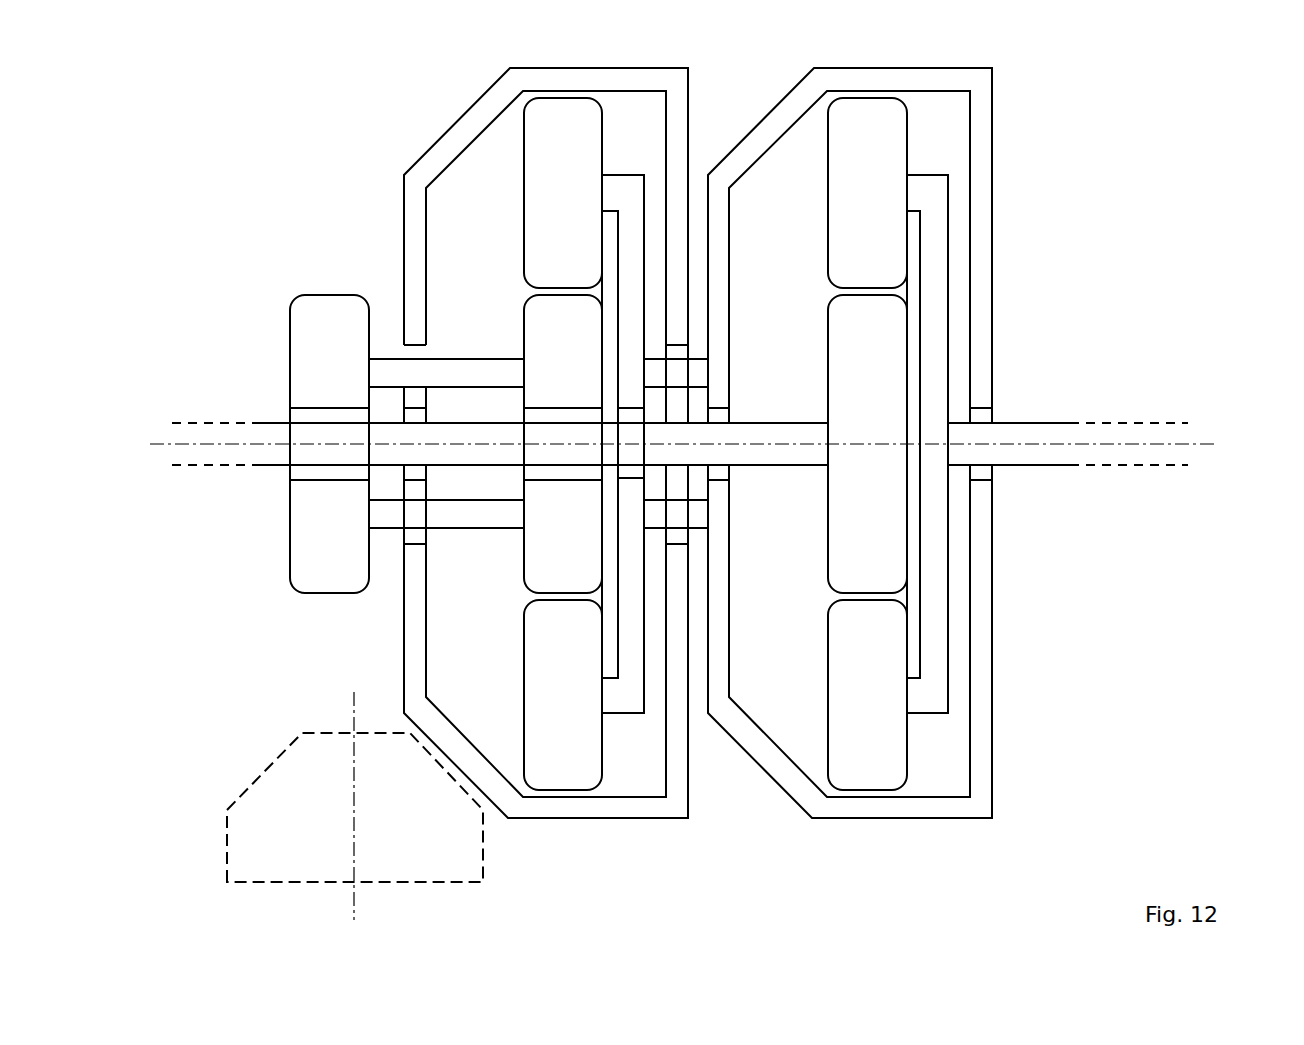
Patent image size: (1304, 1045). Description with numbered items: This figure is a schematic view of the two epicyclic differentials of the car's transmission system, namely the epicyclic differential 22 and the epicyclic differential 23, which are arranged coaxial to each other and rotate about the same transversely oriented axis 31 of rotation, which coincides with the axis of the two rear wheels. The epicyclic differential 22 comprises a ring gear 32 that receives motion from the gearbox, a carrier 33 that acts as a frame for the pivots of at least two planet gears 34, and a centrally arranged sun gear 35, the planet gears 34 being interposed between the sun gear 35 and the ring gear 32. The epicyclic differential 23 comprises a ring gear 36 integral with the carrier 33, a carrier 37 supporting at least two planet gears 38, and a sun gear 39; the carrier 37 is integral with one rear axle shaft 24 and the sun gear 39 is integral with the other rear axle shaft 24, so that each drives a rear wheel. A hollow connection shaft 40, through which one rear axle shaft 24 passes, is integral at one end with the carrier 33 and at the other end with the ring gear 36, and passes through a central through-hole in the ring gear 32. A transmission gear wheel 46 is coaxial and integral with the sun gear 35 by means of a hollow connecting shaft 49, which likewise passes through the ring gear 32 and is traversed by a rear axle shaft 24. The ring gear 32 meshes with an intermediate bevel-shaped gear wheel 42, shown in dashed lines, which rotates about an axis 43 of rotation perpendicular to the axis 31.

The epicyclic differential 22 is at (343, 196).
The epicyclic differential 23 is at (1048, 643).
The rear axle shaft 24 is at (262, 460).
The axis of rotation 31 is at (155, 450).
The ring gear 32 is at (575, 78).
The carrier 33 is at (624, 693).
The planet gear 34 is at (565, 748).
The sun gear 35 is at (553, 330).
The ring gear 36 is at (878, 78).
The carrier 37 is at (935, 690).
The planet gear 38 is at (870, 742).
The sun gear 39 is at (862, 358).
The hollow connection shaft 40 is at (693, 515).
The intermediate bevel-shaped gear wheel 42 is at (270, 815).
The axis of rotation 43 is at (352, 697).
The transmission gear wheel 46 is at (333, 330).
The hollow connecting shaft 49 is at (469, 515).